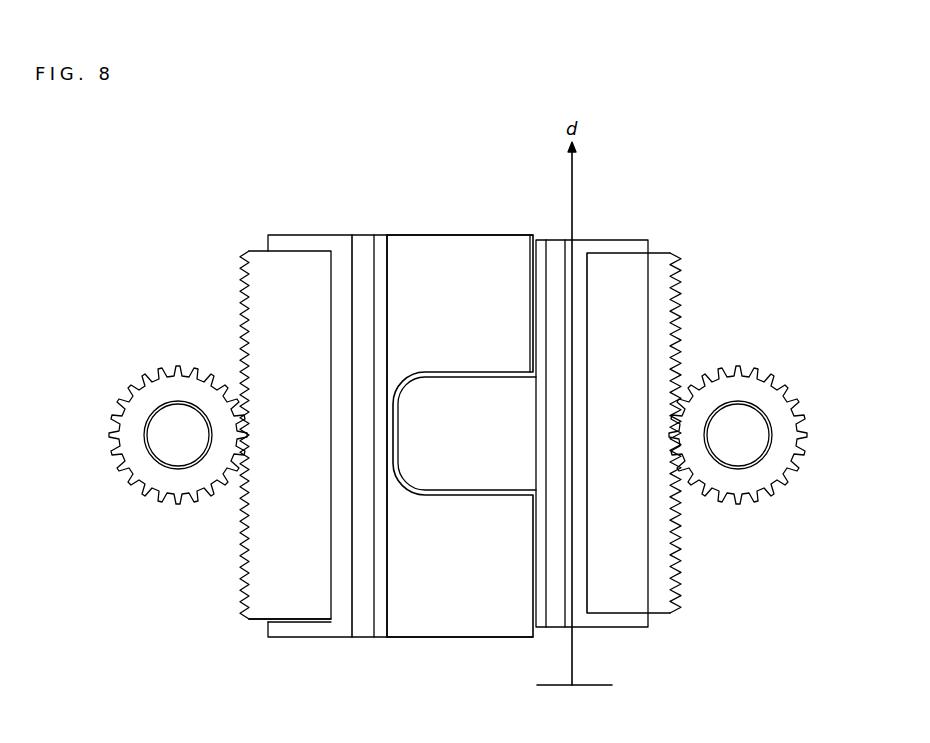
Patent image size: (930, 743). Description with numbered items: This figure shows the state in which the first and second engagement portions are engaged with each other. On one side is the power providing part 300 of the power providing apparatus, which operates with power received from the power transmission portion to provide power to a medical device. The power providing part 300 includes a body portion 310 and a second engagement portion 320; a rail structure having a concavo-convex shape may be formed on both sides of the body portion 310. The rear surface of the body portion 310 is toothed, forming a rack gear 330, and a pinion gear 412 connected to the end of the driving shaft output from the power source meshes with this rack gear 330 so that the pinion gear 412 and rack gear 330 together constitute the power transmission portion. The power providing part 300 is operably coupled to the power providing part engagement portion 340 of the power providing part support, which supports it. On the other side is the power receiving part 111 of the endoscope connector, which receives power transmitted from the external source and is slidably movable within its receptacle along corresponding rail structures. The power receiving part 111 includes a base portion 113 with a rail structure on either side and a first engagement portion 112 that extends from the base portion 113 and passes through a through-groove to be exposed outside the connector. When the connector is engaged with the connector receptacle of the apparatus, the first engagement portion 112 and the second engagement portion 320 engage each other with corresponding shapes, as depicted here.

The power providing part 300 is at (272, 204).
The body portion 310 is at (340, 235).
The second engagement portion 320 is at (480, 248).
The rack gear 330 is at (243, 263).
The power providing part engagement portion 340 is at (380, 235).
The power receiving part 111 is at (665, 228).
The first engagement portion 112 is at (495, 463).
The base portion 113 is at (615, 240).
The pinion gear 412 is at (127, 390).